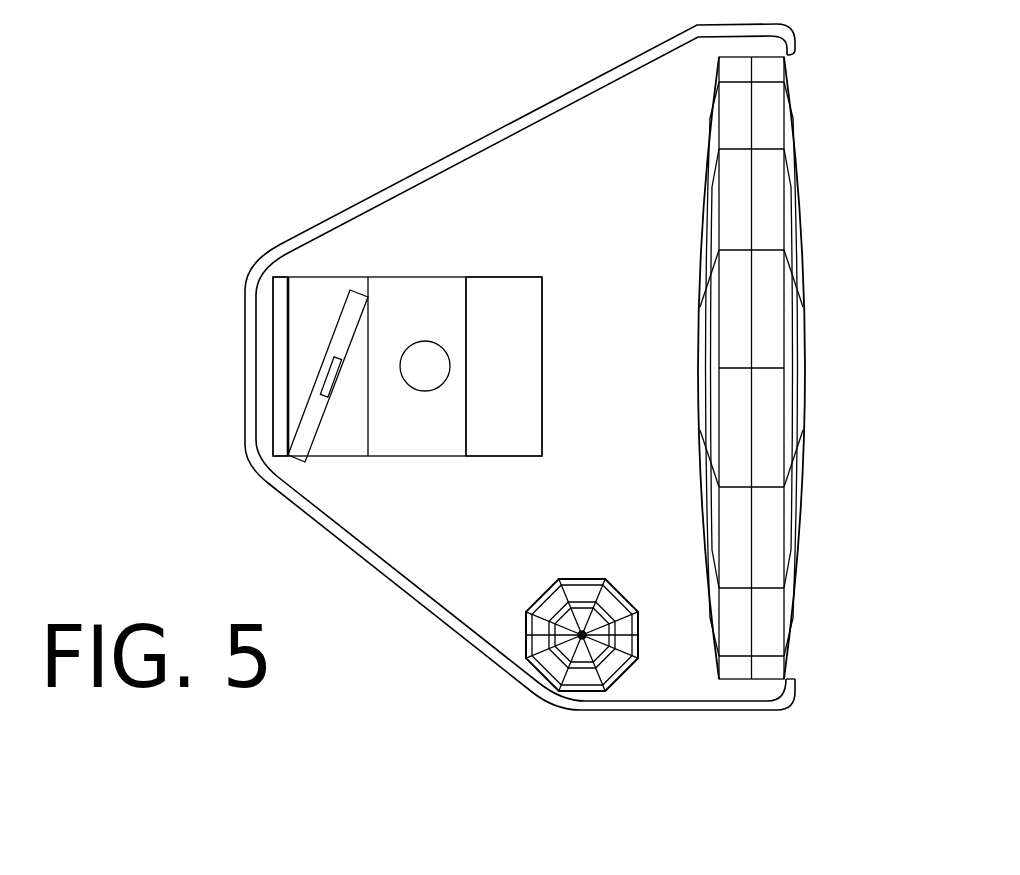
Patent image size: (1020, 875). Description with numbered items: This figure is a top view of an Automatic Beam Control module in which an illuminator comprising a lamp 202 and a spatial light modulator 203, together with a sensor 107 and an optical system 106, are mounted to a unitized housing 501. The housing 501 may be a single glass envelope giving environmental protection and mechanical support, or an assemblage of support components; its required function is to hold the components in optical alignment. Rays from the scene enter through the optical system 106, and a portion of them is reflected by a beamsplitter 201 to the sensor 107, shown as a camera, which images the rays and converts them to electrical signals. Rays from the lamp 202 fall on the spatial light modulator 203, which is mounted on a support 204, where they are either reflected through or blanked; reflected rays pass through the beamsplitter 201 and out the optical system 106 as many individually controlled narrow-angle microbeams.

The housing 501 is at (500, 673).
The optical system 106 is at (793, 607).
The beamsplitter 201 is at (432, 277).
The support 204 is at (273, 398).
The spatial light modulator 203 is at (320, 425).
The sensor 107 is at (542, 435).
The lamp 202 is at (623, 678).